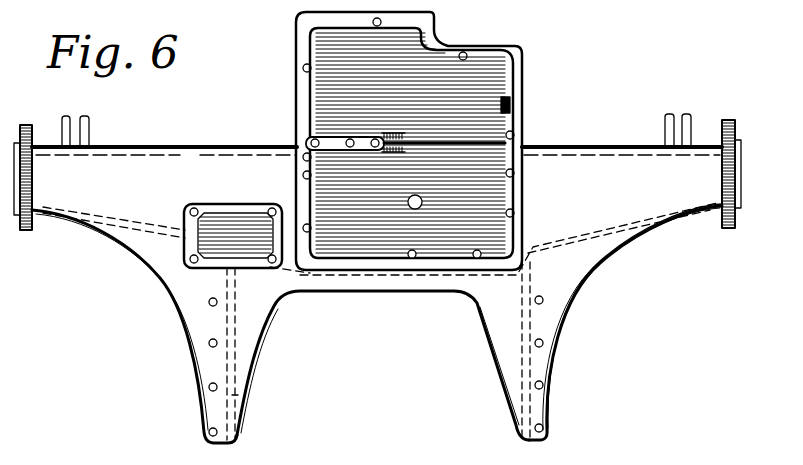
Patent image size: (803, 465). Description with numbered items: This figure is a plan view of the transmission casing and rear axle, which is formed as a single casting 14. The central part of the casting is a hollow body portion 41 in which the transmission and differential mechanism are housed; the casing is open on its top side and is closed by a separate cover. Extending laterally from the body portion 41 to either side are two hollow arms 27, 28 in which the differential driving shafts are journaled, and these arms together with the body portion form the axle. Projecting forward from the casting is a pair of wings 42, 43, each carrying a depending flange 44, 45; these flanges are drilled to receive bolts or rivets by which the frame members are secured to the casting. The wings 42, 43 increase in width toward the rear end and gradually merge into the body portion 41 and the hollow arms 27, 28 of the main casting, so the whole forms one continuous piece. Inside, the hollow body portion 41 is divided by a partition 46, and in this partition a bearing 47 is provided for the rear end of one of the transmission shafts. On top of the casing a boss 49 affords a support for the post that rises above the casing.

The casting 14 is at (592, 275).
The hollow arm 27 is at (604, 142).
The hollow arm 28 is at (134, 149).
The hollow body portion 41 is at (497, 160).
The wing 42 is at (555, 362).
The wing 43 is at (204, 372).
The depending flange 44 is at (512, 372).
The depending flange 45 is at (244, 396).
The partition 46 is at (443, 143).
The bearing 47 is at (350, 137).
The boss 49 is at (192, 231).